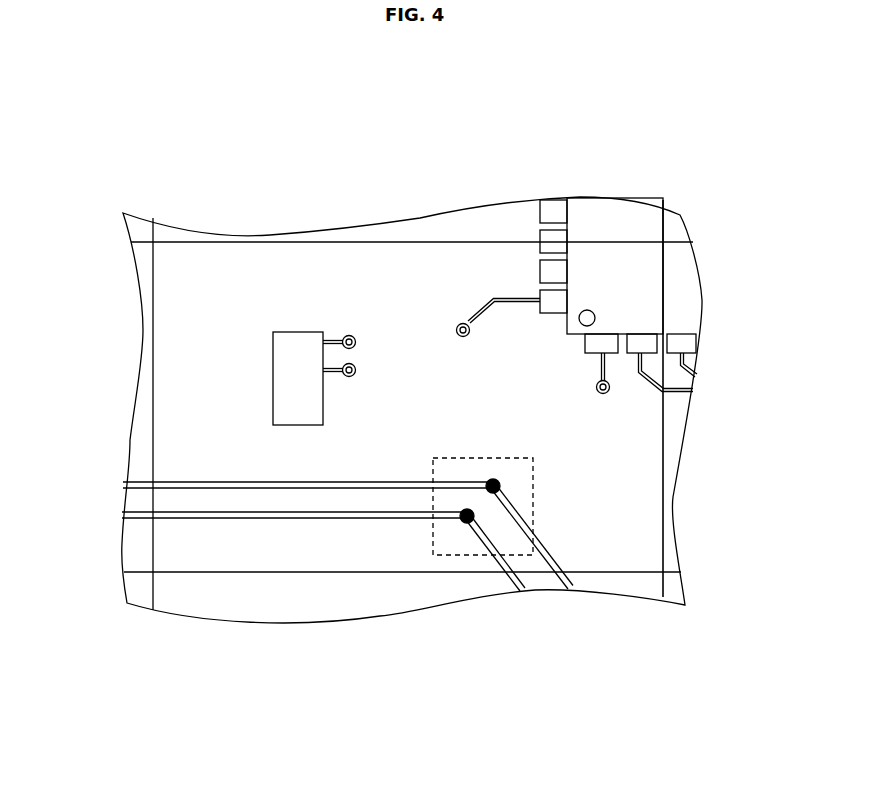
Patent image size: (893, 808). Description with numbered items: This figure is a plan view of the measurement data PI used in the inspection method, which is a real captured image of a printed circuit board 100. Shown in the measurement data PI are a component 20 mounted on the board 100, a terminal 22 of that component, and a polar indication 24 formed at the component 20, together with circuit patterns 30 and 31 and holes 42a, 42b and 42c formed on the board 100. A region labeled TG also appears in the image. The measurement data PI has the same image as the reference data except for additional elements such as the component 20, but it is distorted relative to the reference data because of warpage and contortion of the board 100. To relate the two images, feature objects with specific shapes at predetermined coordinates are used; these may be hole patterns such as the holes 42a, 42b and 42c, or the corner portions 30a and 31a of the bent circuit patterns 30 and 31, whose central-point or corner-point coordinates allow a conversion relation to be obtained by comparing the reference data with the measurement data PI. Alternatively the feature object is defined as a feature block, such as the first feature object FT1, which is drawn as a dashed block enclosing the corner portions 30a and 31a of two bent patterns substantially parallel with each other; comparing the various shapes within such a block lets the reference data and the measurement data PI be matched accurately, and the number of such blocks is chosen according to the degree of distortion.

The board 100 is at (632, 180).
The component 20 is at (282, 380).
The terminal 22 is at (541, 270).
The polar indication 24 is at (273, 332).
The circuit pattern 30 is at (307, 515).
The corner portion 30a is at (467, 523).
The circuit pattern 31 is at (213, 485).
The corner portion 31a is at (496, 482).
The hole 42a is at (349, 335).
The hole 42b is at (355, 367).
The hole 42c is at (462, 323).
The first feature object FT1 is at (445, 556).
The test gate region TG is at (200, 278).
The measurement data PI is at (441, 105).